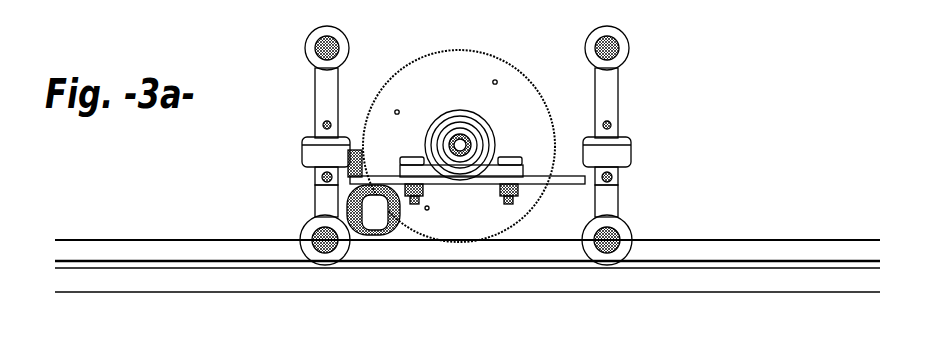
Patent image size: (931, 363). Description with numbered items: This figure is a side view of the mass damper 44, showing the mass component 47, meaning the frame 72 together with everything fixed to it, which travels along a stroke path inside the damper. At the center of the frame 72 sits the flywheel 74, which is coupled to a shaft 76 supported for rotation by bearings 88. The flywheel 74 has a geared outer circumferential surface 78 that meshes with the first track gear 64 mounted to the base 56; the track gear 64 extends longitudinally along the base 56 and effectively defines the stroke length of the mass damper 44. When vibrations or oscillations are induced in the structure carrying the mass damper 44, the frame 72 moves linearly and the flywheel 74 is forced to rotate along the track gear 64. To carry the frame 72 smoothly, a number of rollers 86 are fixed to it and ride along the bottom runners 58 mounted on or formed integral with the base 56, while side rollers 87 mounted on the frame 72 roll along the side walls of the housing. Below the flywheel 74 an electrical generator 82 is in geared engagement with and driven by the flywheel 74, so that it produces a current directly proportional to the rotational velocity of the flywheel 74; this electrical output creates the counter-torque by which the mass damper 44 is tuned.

The mass damper 44 is at (745, 63).
The mass component 47 is at (278, 155).
The base 56 is at (162, 282).
The bottom runners 58 is at (522, 265).
The first track gear 64 is at (245, 238).
The frame 72 is at (622, 98).
The flywheel 74 is at (472, 98).
The shaft 76 is at (462, 143).
The geared outer circumferential surface 78 is at (425, 55).
The electrical generator 82 is at (392, 208).
The rollers 86 is at (313, 44).
The side rollers 87 is at (633, 153).
The bearings 88 is at (430, 123).